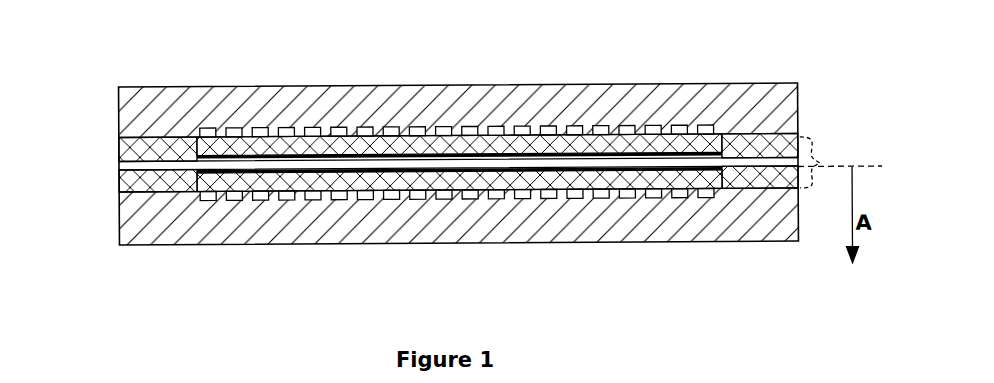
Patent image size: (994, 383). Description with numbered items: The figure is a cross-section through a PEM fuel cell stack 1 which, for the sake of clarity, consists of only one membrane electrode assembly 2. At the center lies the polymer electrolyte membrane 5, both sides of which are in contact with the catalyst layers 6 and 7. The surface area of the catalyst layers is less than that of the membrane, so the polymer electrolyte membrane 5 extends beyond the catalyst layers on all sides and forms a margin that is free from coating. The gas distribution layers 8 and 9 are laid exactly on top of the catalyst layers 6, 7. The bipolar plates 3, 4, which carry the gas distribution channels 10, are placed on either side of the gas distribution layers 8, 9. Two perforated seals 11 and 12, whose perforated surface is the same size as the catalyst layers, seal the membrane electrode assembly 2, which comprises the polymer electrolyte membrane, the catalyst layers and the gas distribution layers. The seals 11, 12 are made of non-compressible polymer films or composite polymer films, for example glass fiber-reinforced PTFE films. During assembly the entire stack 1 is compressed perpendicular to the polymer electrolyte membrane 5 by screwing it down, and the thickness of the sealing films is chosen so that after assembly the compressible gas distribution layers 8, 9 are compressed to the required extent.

The PEM fuel cell stack 1 is at (670, 73).
The membrane electrode assembly 2 is at (825, 162).
The bipolar plate 3 is at (595, 111).
The bipolar plate 4 is at (668, 214).
The polymer electrolyte membrane 5 is at (492, 163).
The catalyst layer 6 is at (391, 156).
The catalyst layer 7 is at (586, 171).
The gas distribution layer 8 is at (281, 142).
The gas distribution layer 9 is at (465, 181).
The gas distribution channels 10 is at (318, 194).
The perforated seal 11 is at (144, 148).
The perforated seal 12 is at (144, 179).